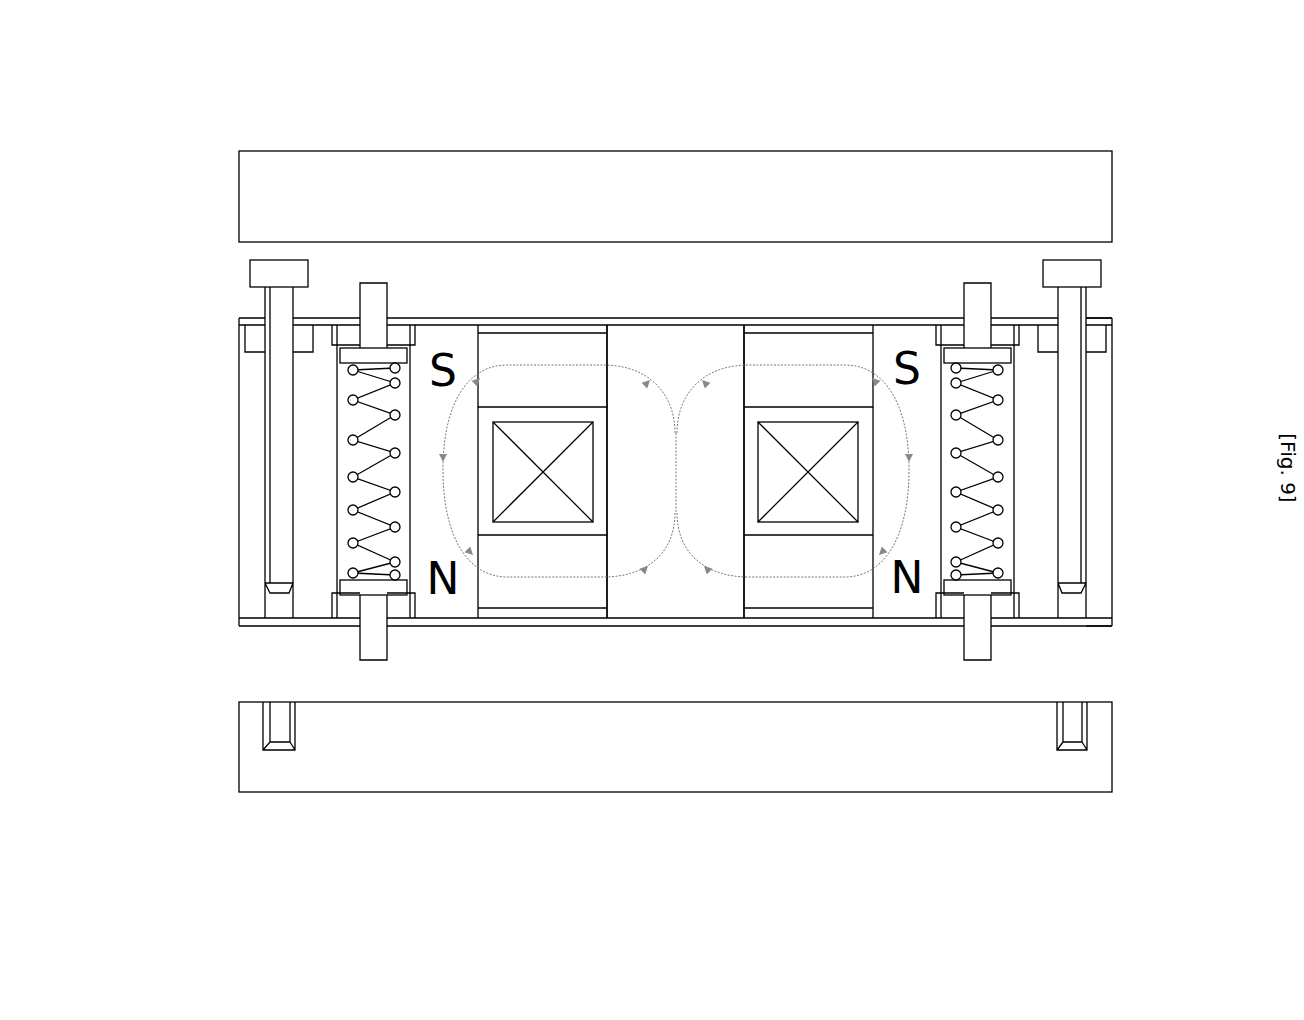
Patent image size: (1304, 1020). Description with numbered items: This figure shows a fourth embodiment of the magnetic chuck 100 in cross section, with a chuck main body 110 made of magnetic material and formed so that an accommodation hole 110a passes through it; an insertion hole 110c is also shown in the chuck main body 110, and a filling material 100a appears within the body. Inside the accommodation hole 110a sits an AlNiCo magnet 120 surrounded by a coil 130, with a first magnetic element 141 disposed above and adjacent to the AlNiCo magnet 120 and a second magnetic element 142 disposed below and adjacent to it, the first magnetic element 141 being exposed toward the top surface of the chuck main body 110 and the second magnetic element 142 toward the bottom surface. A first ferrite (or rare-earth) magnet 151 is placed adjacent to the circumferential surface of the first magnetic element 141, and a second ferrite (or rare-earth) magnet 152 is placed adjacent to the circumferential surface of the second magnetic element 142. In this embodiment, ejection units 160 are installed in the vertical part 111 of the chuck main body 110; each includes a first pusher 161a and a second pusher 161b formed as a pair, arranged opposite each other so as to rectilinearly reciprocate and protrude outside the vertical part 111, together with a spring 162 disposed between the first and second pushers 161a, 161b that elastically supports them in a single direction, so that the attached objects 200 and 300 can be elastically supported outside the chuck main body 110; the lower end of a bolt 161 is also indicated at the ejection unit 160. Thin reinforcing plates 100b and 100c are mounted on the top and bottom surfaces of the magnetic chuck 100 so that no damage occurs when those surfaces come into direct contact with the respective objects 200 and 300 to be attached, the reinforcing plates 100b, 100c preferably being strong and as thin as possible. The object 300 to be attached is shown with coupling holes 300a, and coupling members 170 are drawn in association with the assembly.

The magnetic chuck 100 is at (1150, 455).
The filling material 100a is at (483, 430).
The reinforcing plate 100b is at (1098, 322).
The reinforcing plate 100c is at (1100, 622).
The chuck main body 110 is at (237, 582).
The accommodation hole 110a is at (866, 452).
The insertion hole 110c is at (277, 618).
The vertical part 111 is at (243, 382).
The AlNiCo magnet 120 is at (747, 497).
The coil 130 is at (490, 497).
The first magnetic element 141 is at (675, 320).
The second magnetic element 142 is at (683, 620).
The first ferrite (or rare-earth) magnet 151 is at (548, 333).
The second ferrite (or rare-earth) magnet 152 is at (545, 608).
The ejection unit 160 is at (978, 283).
The lower end of bolt 161 is at (980, 650).
The first pusher 161a is at (373, 290).
The second pusher 161b is at (372, 650).
The spring 162 is at (1000, 562).
The coupling members 170 is at (249, 272).
The object to be attached 200 is at (713, 150).
The object to be attached 300 is at (676, 793).
The coupling holes 300a is at (1075, 742).